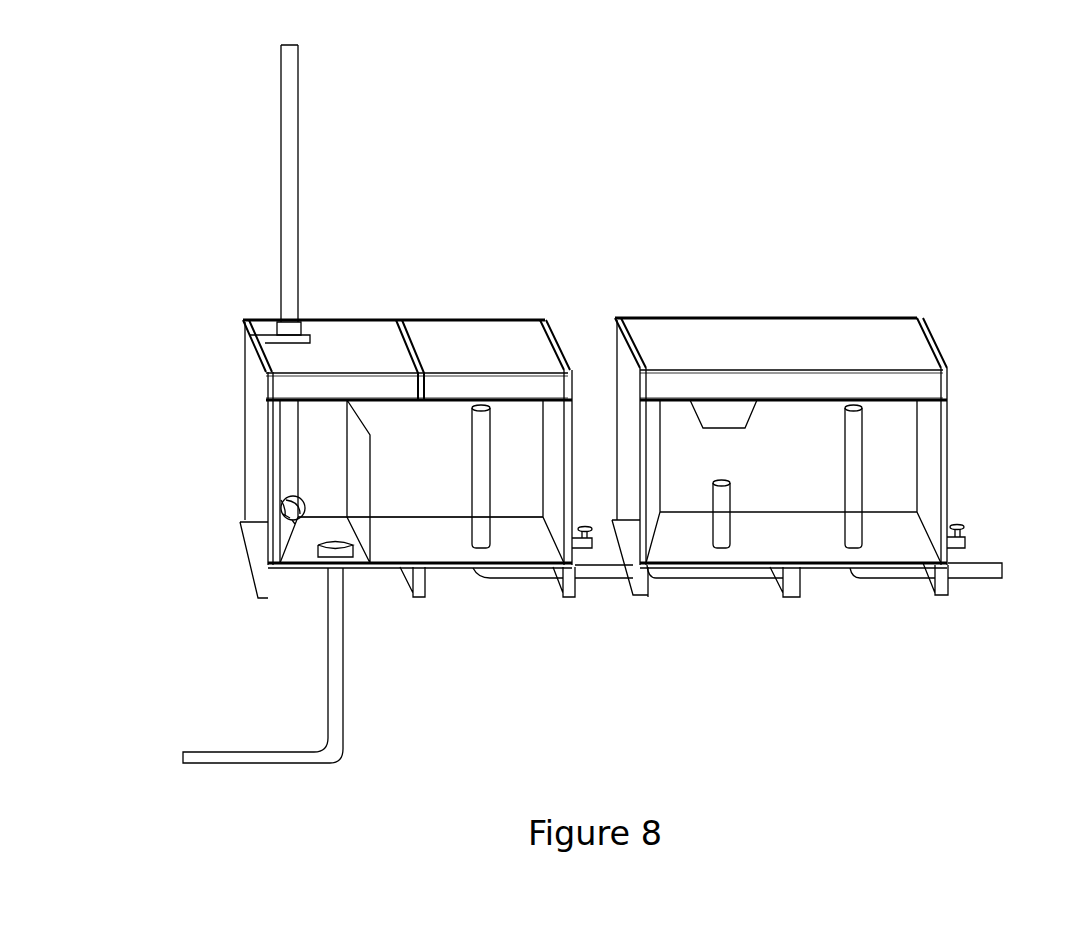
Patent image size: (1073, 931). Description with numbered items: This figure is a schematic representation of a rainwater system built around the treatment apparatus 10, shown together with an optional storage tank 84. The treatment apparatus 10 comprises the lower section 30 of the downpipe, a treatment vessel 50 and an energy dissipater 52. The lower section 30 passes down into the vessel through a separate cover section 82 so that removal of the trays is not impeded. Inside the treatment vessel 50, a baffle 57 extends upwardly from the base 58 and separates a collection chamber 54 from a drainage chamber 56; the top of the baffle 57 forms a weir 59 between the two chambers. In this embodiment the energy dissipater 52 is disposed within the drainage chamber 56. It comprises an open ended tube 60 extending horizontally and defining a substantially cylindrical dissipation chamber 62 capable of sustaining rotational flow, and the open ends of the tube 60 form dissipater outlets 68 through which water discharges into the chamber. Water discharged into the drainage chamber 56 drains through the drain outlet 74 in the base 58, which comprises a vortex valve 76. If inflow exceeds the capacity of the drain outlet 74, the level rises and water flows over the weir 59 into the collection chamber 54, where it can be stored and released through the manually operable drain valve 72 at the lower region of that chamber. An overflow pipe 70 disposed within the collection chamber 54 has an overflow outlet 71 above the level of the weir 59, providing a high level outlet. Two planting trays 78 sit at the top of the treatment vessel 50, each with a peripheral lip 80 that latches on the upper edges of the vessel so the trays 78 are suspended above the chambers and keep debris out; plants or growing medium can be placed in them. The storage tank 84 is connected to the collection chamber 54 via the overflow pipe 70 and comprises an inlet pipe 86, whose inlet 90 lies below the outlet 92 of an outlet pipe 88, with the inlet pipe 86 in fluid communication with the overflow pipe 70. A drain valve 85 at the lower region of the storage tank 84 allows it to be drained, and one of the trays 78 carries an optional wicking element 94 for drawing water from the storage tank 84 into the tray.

The treatment apparatus 10 is at (431, 290).
The lower section of the downpipe 30 is at (292, 138).
The treatment vessel 50 is at (250, 430).
The energy dissipater 52 is at (287, 508).
The collection chamber 54 is at (408, 472).
The drainage chamber 56 is at (340, 473).
The baffle 57 is at (376, 540).
The base 58 is at (450, 553).
The weir 59 is at (372, 427).
The open ended tube 60 is at (294, 525).
The dissipation chamber 62 is at (285, 513).
The dissipater outlets 68 is at (272, 500).
The overflow pipe 70 is at (484, 527).
The overflow outlet 71 is at (484, 407).
The drain valve 72 is at (588, 549).
The drain outlet 74 is at (322, 553).
The vortex valve 76 is at (342, 553).
The planting trays 78 is at (358, 345).
The peripheral lip 80 is at (250, 342).
The cover section 82 is at (258, 325).
The storage tank 84 is at (864, 275).
The drain valve 85 is at (963, 540).
The inlet pipe 86 is at (727, 527).
The outlet pipe 88 is at (856, 445).
The inlet 90 is at (725, 481).
The outlet 92 is at (857, 406).
The wicking element 94 is at (727, 418).